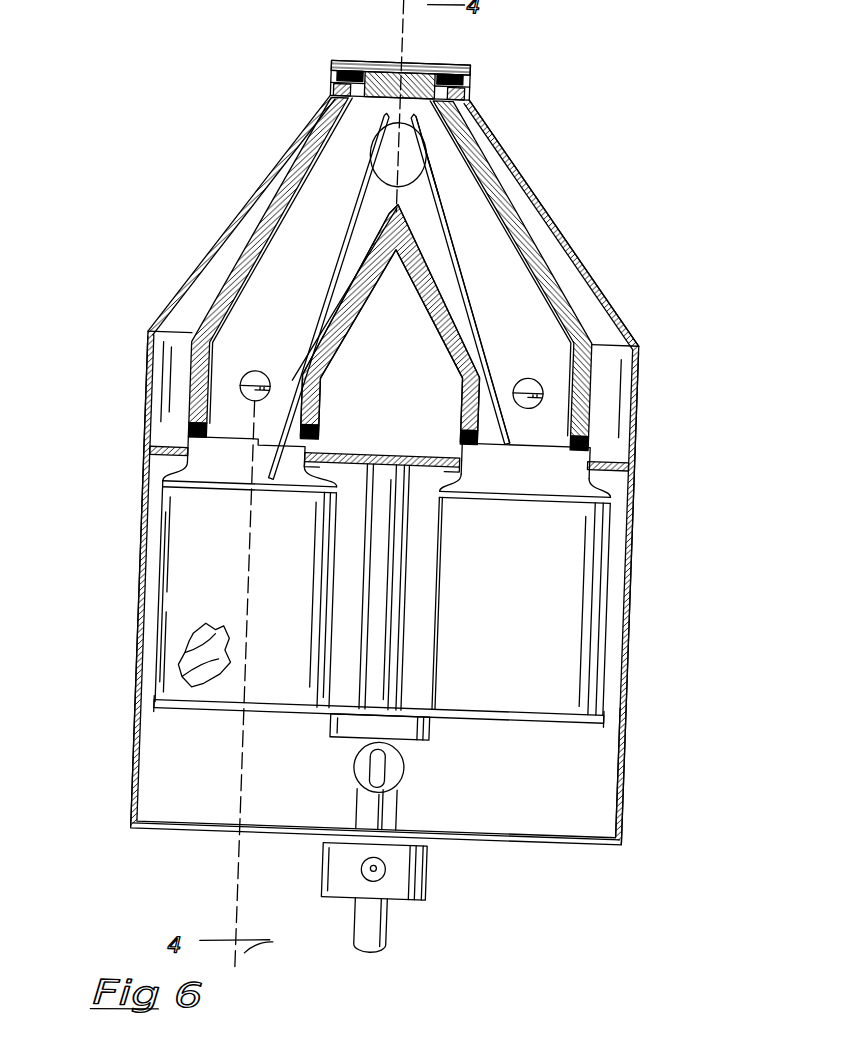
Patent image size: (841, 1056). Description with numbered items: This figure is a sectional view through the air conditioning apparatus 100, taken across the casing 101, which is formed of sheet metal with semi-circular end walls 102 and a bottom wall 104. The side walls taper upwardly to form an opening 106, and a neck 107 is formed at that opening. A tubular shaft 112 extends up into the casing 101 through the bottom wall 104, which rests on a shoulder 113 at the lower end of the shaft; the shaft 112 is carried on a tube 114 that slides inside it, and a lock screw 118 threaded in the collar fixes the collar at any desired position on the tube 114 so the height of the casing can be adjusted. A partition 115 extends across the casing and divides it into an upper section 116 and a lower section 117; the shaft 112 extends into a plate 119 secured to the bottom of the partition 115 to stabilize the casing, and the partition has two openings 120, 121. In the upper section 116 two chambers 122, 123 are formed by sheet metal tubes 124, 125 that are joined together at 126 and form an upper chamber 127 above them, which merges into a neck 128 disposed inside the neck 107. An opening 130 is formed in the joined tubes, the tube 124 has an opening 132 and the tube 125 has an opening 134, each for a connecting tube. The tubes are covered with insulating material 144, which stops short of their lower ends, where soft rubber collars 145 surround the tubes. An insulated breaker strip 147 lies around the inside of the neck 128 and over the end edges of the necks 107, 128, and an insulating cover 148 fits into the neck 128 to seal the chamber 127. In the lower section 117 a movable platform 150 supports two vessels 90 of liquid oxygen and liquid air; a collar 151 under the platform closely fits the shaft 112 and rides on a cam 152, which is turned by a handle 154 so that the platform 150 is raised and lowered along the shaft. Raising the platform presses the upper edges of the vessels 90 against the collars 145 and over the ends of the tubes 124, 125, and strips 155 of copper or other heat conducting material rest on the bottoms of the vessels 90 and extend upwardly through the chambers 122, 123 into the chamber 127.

The air conditioning apparatus 100 is at (381, 492).
The casing 101 is at (655, 793).
The semi-circular end walls 102 is at (636, 489).
The bottom wall 104 is at (247, 841).
The opening 106 is at (458, 94).
The neck 107 is at (453, 88).
The tubular shaft 112 is at (385, 806).
The shoulder 113 is at (415, 882).
The tube 114 is at (395, 940).
The partition 115 is at (423, 459).
The upper section 116 is at (572, 292).
The lower section 117 is at (596, 758).
The lock screw 118 is at (383, 879).
The plate 119 is at (429, 476).
The opening 120 is at (597, 455).
The opening 121 is at (180, 453).
The chamber 122 is at (280, 307).
The chamber 123 is at (489, 270).
The sheet metal tube 124 is at (247, 301).
The sheet metal tube 125 is at (558, 312).
The joint 126 is at (389, 198).
The upper chamber 127 is at (426, 131).
The neck 128 is at (321, 96).
The opening 130 is at (420, 151).
The opening 132 is at (252, 377).
The opening 134 is at (523, 381).
The insulating material 144 is at (510, 231).
The soft rubber collars 145 is at (316, 435).
The insulated breaker strip 147 is at (324, 80).
The insulating cover 148 is at (384, 62).
The movable platform 150 is at (192, 716).
The collar 151 is at (442, 737).
The cam 152 is at (415, 768).
The handle 154 is at (381, 773).
The strips 155 is at (324, 271).
The vessels 90 is at (238, 526).